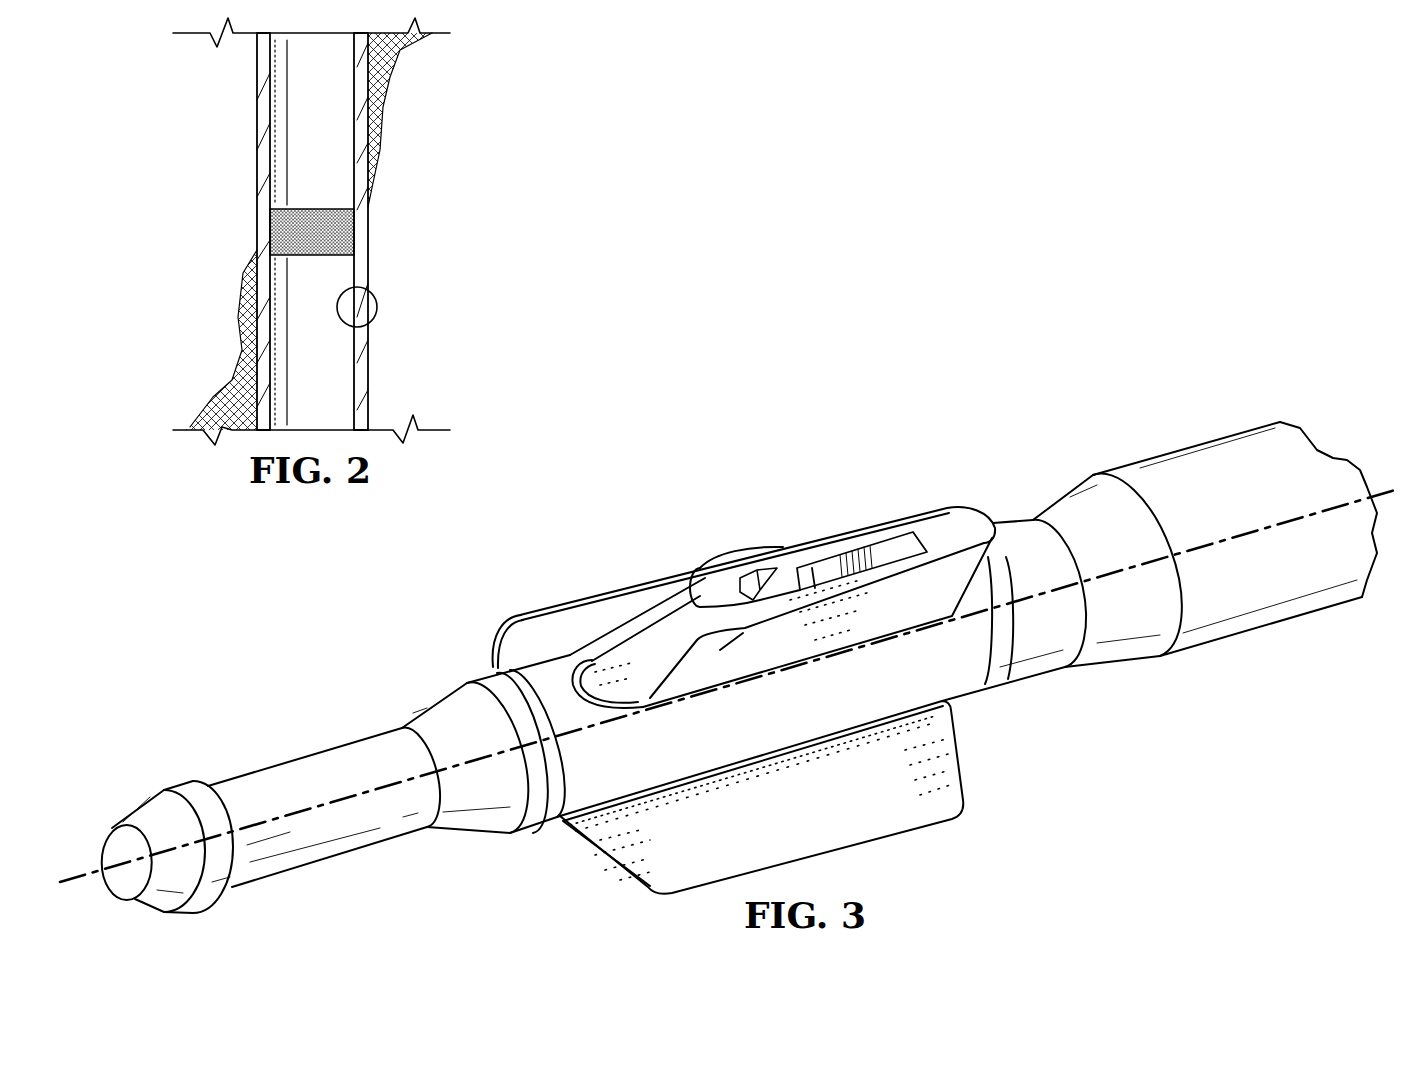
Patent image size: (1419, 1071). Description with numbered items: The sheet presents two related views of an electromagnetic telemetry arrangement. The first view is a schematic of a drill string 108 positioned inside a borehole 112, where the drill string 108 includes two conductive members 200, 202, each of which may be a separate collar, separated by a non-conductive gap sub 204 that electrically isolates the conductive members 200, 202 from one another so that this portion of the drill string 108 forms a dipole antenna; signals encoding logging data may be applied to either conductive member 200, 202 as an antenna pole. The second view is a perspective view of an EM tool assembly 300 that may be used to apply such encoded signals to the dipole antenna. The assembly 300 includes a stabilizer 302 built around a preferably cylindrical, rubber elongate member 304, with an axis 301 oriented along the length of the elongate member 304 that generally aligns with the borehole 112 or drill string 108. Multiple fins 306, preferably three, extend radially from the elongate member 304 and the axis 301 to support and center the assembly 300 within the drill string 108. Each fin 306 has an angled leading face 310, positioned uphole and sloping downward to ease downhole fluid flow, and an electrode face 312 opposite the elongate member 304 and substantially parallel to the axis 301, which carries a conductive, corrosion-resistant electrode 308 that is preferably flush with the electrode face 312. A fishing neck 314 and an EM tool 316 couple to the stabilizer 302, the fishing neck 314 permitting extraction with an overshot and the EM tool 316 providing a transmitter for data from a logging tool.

In FIG. 2, the drill string 108 is at (191, 182).
In FIG. 2, the borehole 112 is at (377, 308).
In FIG. 2, the conductive member 200 is at (348, 125).
In FIG. 2, the conductive member 202 is at (348, 376).
In FIG. 2, the non-conductive gap sub 204 is at (318, 212).
In FIG. 3, the EM tool assembly 300 is at (732, 667).
In FIG. 3, the axis 301 is at (1396, 490).
In FIG. 3, the stabilizer 302 is at (752, 547).
In FIG. 3, the elongate member 304 is at (971, 715).
In FIG. 3, the fins 306 is at (977, 489).
In FIG. 3, the electrode 308 is at (870, 552).
In FIG. 3, the angled leading face 310 is at (657, 636).
In FIG. 3, the electrode face 312 is at (933, 532).
In FIG. 3, the fishing neck 314 is at (300, 763).
In FIG. 3, the EM tool 316 is at (1322, 462).